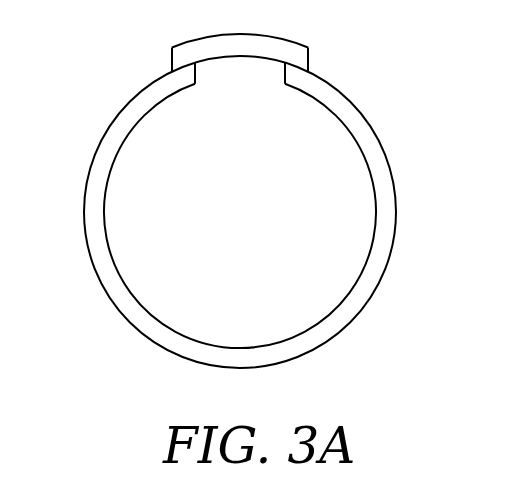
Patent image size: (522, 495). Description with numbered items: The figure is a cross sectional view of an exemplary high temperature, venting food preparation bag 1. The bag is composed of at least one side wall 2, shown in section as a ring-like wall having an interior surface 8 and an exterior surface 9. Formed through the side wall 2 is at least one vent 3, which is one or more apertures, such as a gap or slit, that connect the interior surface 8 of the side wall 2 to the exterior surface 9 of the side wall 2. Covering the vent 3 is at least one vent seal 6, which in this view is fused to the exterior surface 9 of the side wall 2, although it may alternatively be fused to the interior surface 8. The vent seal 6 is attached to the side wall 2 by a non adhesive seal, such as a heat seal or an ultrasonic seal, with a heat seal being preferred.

The food preparation bag 1 is at (395, 78).
The side wall 2 is at (385, 215).
The vent 3 is at (252, 70).
The vent seal 6 is at (284, 53).
The interior surface 8 is at (140, 298).
The exterior surface 9 is at (102, 282).